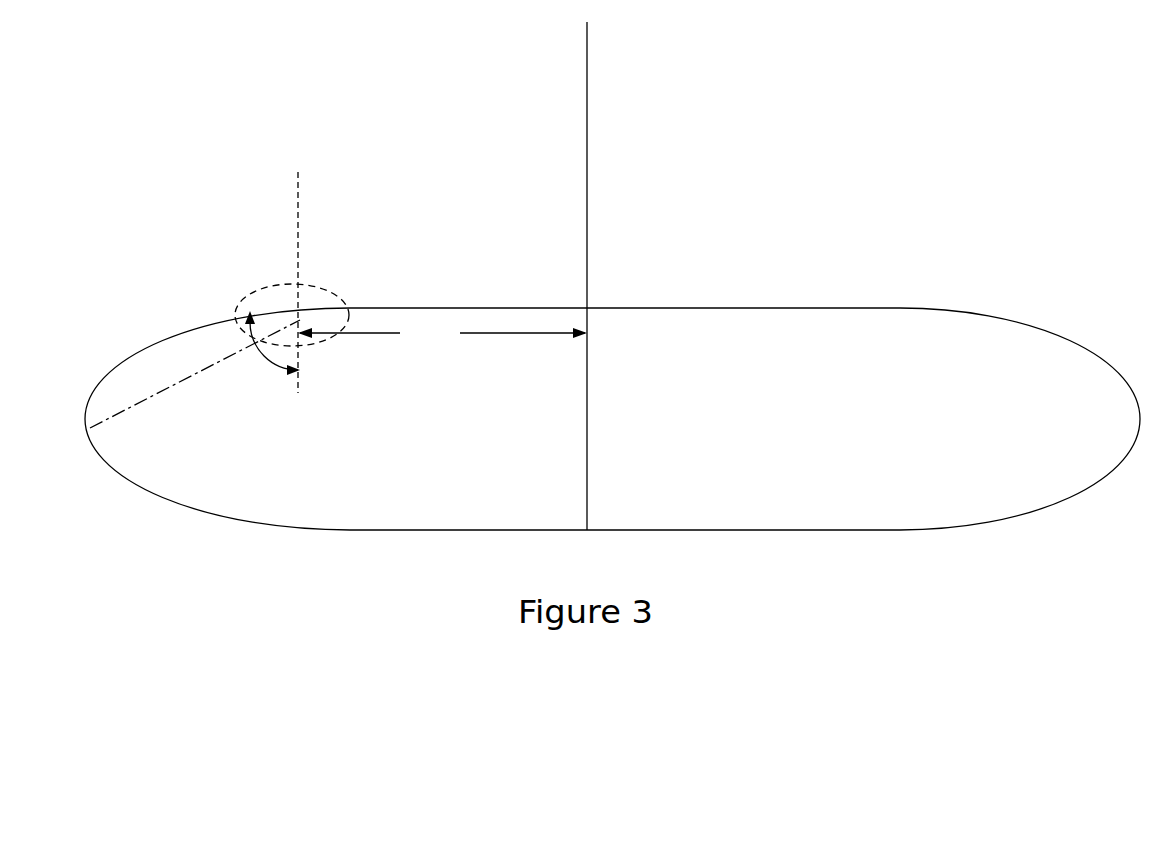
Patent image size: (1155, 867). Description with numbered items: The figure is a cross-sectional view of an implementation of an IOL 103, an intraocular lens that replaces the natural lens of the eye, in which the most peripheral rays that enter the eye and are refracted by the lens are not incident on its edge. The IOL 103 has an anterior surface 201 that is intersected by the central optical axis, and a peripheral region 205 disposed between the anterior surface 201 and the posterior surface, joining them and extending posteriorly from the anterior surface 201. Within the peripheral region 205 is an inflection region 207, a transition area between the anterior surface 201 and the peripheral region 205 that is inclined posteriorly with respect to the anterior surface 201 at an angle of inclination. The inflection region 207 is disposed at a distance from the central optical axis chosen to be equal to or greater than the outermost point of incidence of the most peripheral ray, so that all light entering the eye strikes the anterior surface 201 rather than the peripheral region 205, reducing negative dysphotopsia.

The IOL 103 is at (612, 270).
The anterior surface 201 is at (490, 305).
The peripheral region 205 is at (180, 335).
The inflection region 207 is at (298, 285).